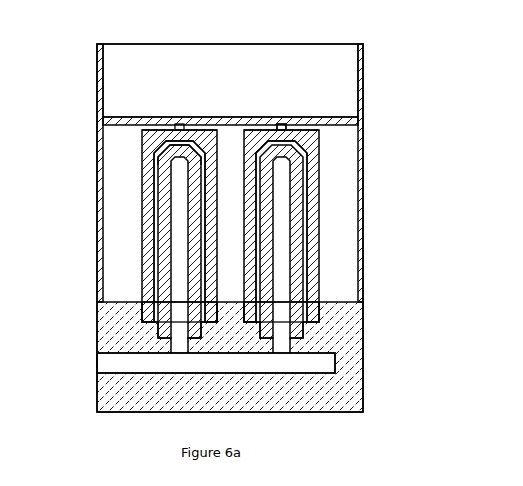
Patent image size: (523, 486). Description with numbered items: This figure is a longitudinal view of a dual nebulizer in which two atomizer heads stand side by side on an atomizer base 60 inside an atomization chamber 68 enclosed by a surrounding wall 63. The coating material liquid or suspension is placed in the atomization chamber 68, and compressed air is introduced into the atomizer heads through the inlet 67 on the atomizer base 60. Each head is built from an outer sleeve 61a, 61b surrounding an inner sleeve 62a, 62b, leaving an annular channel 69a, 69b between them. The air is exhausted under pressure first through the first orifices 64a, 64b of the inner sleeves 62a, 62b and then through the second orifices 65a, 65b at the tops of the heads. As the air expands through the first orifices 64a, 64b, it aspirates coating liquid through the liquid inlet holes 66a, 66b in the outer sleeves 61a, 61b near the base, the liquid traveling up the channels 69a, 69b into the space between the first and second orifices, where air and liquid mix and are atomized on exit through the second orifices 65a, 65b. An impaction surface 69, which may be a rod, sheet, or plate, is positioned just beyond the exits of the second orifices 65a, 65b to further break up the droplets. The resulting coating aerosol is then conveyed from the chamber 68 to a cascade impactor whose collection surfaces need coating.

The atomizer base 60 is at (355, 333).
The outer sleeve 61a is at (146, 262).
The outer sleeve 61b is at (318, 152).
The inner sleeve 62a is at (158, 200).
The inner sleeve 62b is at (302, 178).
The outer wall / housing 63 is at (96, 78).
The first orifice 64a is at (162, 154).
The first orifice 64b is at (333, 124).
The second orifice 65a is at (150, 131).
The second orifice 65b is at (314, 131).
The liquid inlet hole 66a is at (142, 300).
The liquid inlet hole 66b is at (312, 300).
The inlet 67 is at (108, 362).
The atomization chamber 68 is at (307, 62).
The impaction surface 69 is at (285, 127).
The channel 69a is at (156, 233).
The channel 69b is at (305, 218).